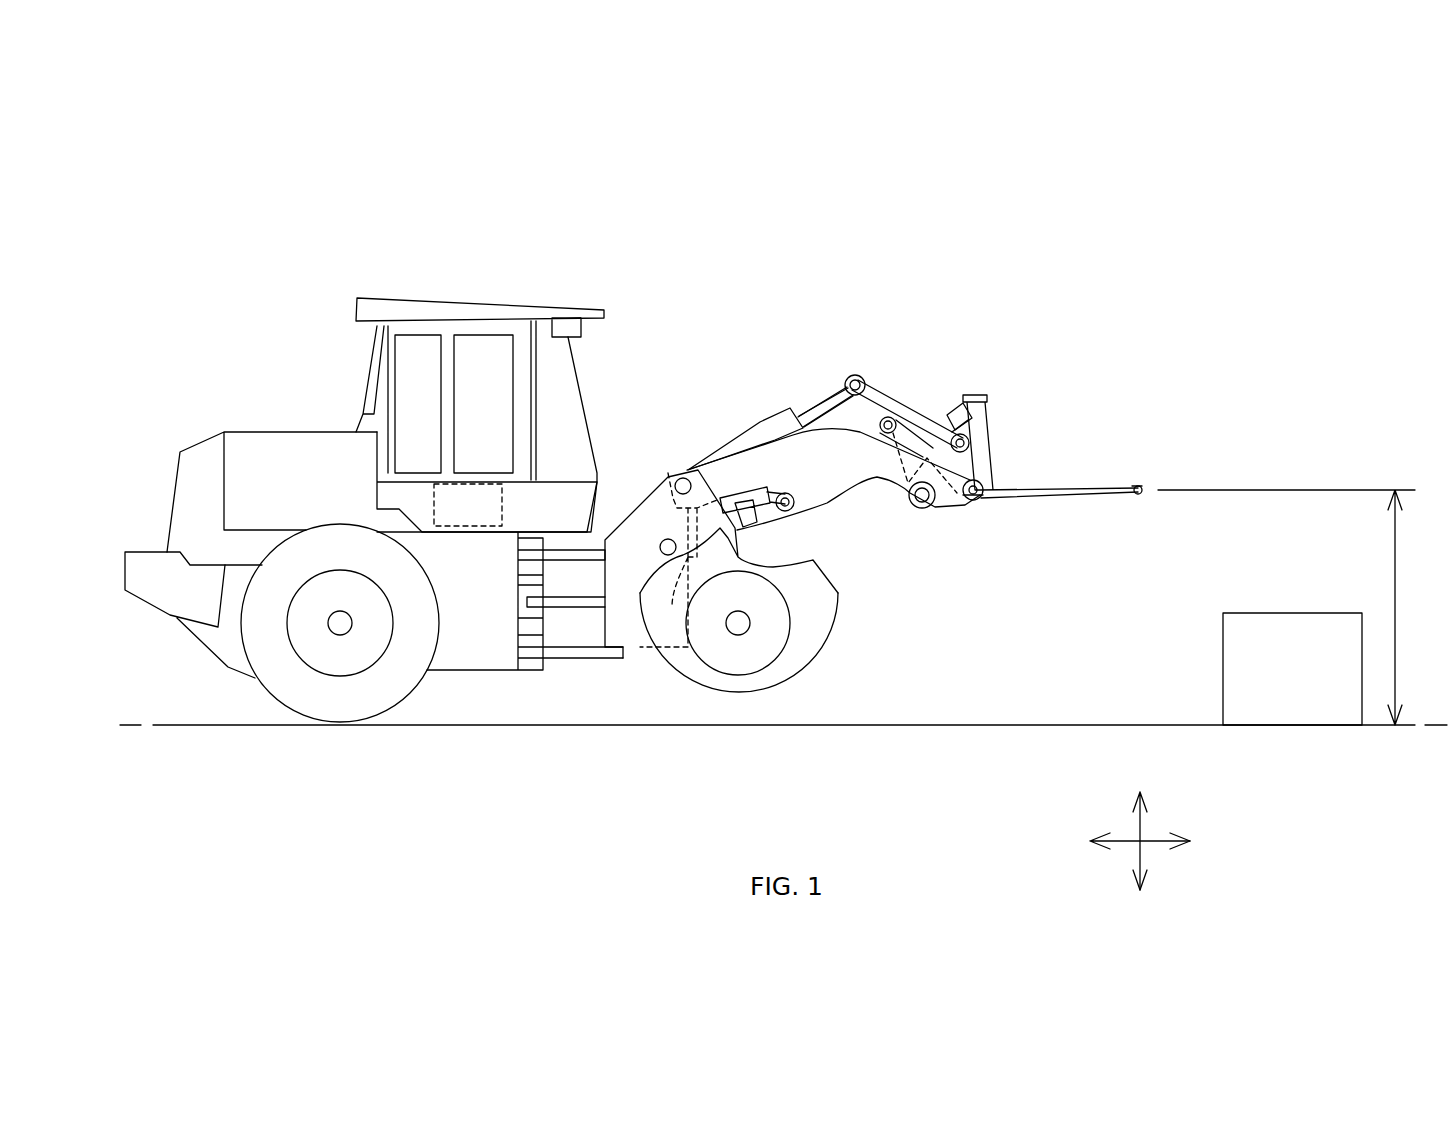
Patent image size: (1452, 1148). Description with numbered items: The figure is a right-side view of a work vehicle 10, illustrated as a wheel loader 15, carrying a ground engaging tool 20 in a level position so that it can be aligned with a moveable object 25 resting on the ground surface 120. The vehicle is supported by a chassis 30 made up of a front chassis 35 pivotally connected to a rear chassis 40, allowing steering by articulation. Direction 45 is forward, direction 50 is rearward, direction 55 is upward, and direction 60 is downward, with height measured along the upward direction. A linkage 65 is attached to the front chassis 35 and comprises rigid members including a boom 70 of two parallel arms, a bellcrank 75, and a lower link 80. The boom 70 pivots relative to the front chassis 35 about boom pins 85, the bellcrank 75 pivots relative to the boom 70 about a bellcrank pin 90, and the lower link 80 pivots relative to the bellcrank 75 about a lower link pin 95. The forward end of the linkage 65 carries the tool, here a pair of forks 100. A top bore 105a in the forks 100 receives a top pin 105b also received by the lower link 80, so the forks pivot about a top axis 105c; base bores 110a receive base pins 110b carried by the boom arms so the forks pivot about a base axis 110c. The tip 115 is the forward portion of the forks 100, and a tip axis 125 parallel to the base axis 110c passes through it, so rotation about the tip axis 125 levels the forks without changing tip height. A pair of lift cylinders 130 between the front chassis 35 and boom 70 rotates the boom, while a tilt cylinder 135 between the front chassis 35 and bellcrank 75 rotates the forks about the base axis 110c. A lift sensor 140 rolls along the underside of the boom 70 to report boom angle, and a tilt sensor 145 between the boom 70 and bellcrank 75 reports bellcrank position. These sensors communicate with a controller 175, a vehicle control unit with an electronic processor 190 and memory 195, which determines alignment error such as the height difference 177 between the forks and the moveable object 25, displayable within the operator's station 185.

The work vehicle 10 is at (818, 173).
The wheel loader 15 is at (692, 110).
The ground engaging tool 20 is at (1101, 328).
The moveable object 25 is at (1295, 642).
The chassis 30 is at (534, 719).
The front chassis 35 is at (628, 620).
The rear chassis 40 is at (470, 603).
The forward direction 45 is at (1160, 845).
The rearward direction 50 is at (1118, 838).
The upward direction 55 is at (1140, 818).
The downward direction 60 is at (1138, 863).
The linkage 65 is at (793, 377).
The boom 70 is at (813, 460).
The bellcrank 75 is at (873, 377).
The lower link 80 is at (927, 420).
The boom pin 85 is at (686, 477).
The bellcrank pin 90 is at (891, 418).
The lower link pin 95 is at (915, 505).
The forks 100 is at (1052, 463).
The top bore 105a is at (955, 416).
The top pin 105b is at (980, 422).
The top axis 105c is at (967, 450).
The base bore 110a is at (968, 500).
The base pin 110b is at (970, 498).
The base axis 110c is at (980, 492).
The tip 115 is at (1143, 472).
The ground surface 120 is at (918, 723).
The tip axis 125 is at (1143, 494).
The lift cylinder 130 is at (753, 530).
The tilt cylinder 135 is at (770, 428).
The lift sensor 140 is at (628, 600).
The tilt sensor 145 is at (903, 413).
The controller 175 is at (492, 516).
The height difference 177 is at (1289, 607).
The operator's station 185 is at (455, 316).
The electronic processor 190 is at (445, 484).
The memory 195 is at (478, 484).